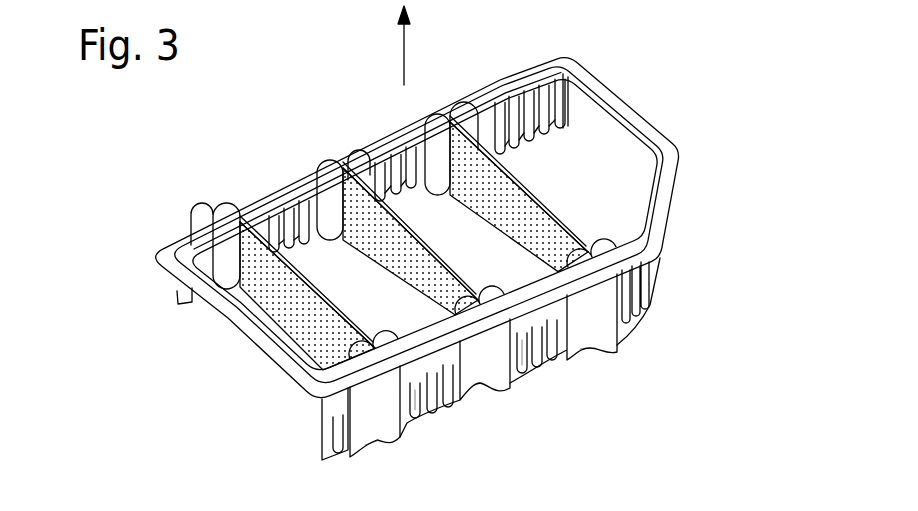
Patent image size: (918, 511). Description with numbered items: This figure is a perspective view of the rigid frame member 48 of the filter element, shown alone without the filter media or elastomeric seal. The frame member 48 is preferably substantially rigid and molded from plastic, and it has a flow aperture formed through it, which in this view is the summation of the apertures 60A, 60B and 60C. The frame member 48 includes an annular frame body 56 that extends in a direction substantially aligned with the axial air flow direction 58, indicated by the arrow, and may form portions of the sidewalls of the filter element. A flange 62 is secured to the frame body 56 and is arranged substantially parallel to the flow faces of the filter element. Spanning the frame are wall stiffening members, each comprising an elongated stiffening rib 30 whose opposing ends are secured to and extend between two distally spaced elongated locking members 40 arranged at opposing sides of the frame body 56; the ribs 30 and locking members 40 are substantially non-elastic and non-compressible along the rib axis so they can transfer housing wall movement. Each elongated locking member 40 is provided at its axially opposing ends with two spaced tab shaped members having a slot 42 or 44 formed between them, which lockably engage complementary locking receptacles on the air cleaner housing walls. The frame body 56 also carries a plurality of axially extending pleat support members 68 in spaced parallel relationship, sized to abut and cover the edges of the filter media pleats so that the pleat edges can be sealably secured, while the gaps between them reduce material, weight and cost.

The elongated stiffening rib 30 is at (294, 303).
The elongated locking member 40 is at (332, 212).
The slot 42 is at (452, 106).
The slot 44 is at (375, 447).
The frame member 48 is at (680, 67).
The frame body 56 is at (655, 252).
The axial air flow direction 58 is at (404, 42).
The aperture 60A is at (398, 306).
The aperture 60B is at (488, 250).
The aperture 60C is at (608, 194).
The flange 62 is at (600, 75).
The axially extending pleat support member 68 is at (445, 408).